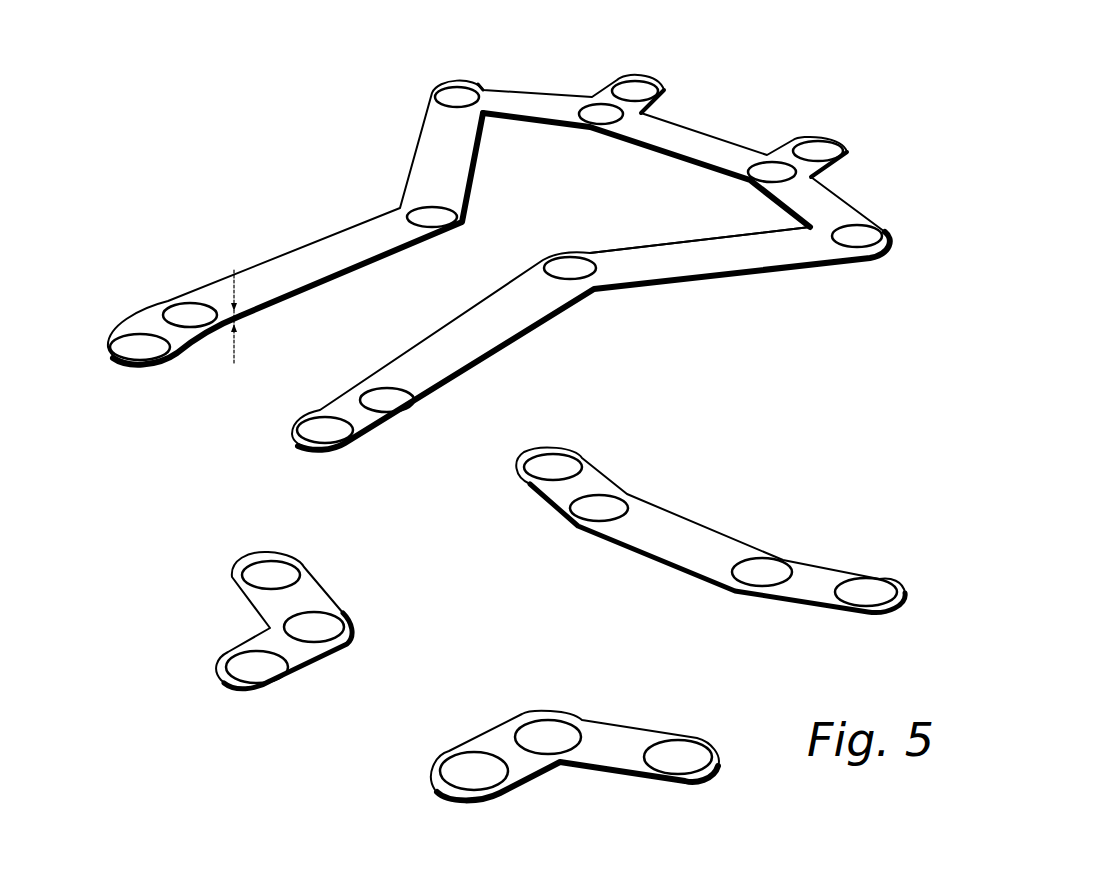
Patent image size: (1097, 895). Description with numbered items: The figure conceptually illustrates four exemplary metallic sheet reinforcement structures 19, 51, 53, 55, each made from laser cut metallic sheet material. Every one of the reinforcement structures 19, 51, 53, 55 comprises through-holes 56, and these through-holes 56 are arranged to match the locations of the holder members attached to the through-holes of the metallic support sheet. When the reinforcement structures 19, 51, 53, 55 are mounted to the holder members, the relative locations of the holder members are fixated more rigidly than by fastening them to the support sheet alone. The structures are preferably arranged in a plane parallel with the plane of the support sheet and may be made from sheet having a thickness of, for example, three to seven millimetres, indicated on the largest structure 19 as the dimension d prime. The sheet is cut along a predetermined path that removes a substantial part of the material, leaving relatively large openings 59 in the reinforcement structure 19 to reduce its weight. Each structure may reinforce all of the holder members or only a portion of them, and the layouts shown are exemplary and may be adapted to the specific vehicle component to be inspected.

The metallic sheet reinforcement structure 19 is at (296, 171).
The metallic sheet reinforcement structure 51 is at (284, 486).
The metallic sheet reinforcement structure 53 is at (727, 472).
The metallic sheet reinforcement structure 55 is at (530, 669).
The through-holes 56 is at (455, 95).
The openings 59 is at (626, 195).